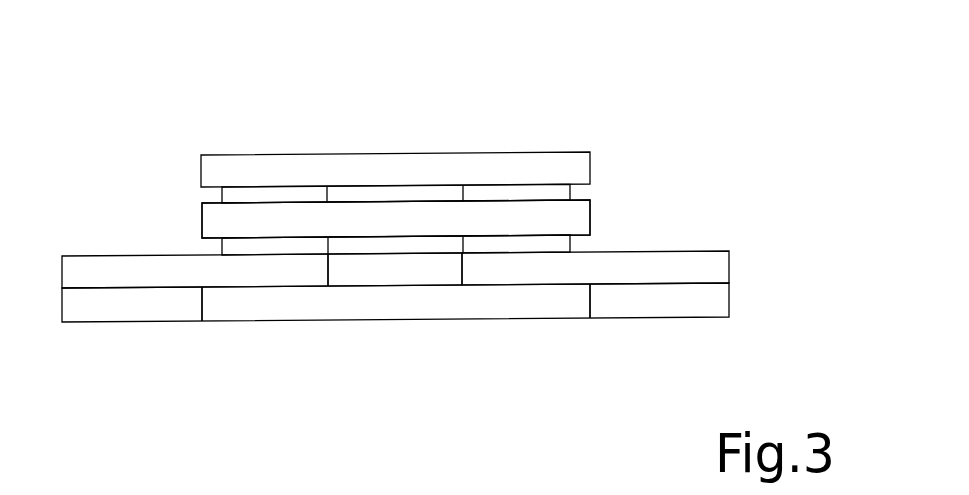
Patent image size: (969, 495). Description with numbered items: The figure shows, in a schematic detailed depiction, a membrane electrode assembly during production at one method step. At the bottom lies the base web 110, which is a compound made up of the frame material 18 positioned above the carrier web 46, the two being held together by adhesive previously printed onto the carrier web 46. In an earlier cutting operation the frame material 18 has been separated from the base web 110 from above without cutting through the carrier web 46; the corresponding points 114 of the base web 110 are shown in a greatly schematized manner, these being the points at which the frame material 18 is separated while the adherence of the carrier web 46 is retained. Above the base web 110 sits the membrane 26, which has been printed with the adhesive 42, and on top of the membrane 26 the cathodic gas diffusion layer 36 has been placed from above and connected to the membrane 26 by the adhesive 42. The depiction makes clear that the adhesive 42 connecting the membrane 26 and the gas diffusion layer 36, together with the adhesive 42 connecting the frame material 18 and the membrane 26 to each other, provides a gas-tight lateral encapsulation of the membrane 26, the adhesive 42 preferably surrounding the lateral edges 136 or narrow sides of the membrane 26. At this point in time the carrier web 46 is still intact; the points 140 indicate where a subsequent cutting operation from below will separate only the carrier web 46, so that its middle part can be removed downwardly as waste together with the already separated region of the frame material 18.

The base web 110 is at (781, 205).
The frame material 18 is at (72, 272).
The carrier web 46 is at (685, 300).
The points 140 is at (198, 343).
The points 114 is at (340, 302).
The cathodic gas diffusion layer 36 is at (492, 165).
The adhesive 42 is at (222, 196).
The lateral edges 136 is at (212, 222).
The membrane 26 is at (396, 218).